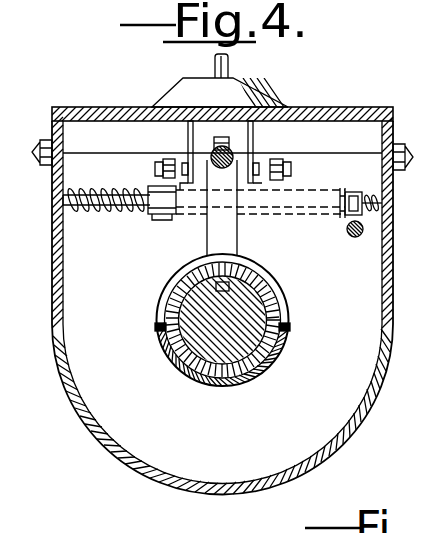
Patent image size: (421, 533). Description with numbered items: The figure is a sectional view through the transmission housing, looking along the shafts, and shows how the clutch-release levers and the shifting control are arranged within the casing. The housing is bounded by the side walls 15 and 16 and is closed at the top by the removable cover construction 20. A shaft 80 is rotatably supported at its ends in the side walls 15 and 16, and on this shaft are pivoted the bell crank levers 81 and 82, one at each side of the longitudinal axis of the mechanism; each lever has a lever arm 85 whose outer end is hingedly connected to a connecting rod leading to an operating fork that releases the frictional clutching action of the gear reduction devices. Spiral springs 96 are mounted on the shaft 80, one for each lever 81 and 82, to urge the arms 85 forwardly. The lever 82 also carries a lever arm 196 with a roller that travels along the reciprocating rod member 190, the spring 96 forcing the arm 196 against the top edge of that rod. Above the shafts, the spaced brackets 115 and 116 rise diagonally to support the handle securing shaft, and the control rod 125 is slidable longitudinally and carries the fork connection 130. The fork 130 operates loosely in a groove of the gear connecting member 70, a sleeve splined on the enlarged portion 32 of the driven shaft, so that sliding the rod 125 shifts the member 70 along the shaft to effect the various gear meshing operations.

The removable cover construction 20 is at (119, 107).
The side wall 15 is at (55, 275).
The side wall 16 is at (386, 266).
The spiral springs 96 is at (92, 212).
The shaft 80 is at (145, 212).
The bell crank lever 81 is at (176, 212).
The bell crank lever 82 is at (298, 211).
The bracket 115 is at (188, 143).
The bracket 116 is at (254, 141).
The lever arm 85 is at (158, 178).
The control rod 125 is at (238, 158).
The fork connection 130 is at (236, 236).
The lever arm 196 is at (348, 218).
The reciprocating rod member 190 is at (354, 238).
The gear connecting member 70 is at (181, 370).
The enlarged portion 32 is at (223, 357).